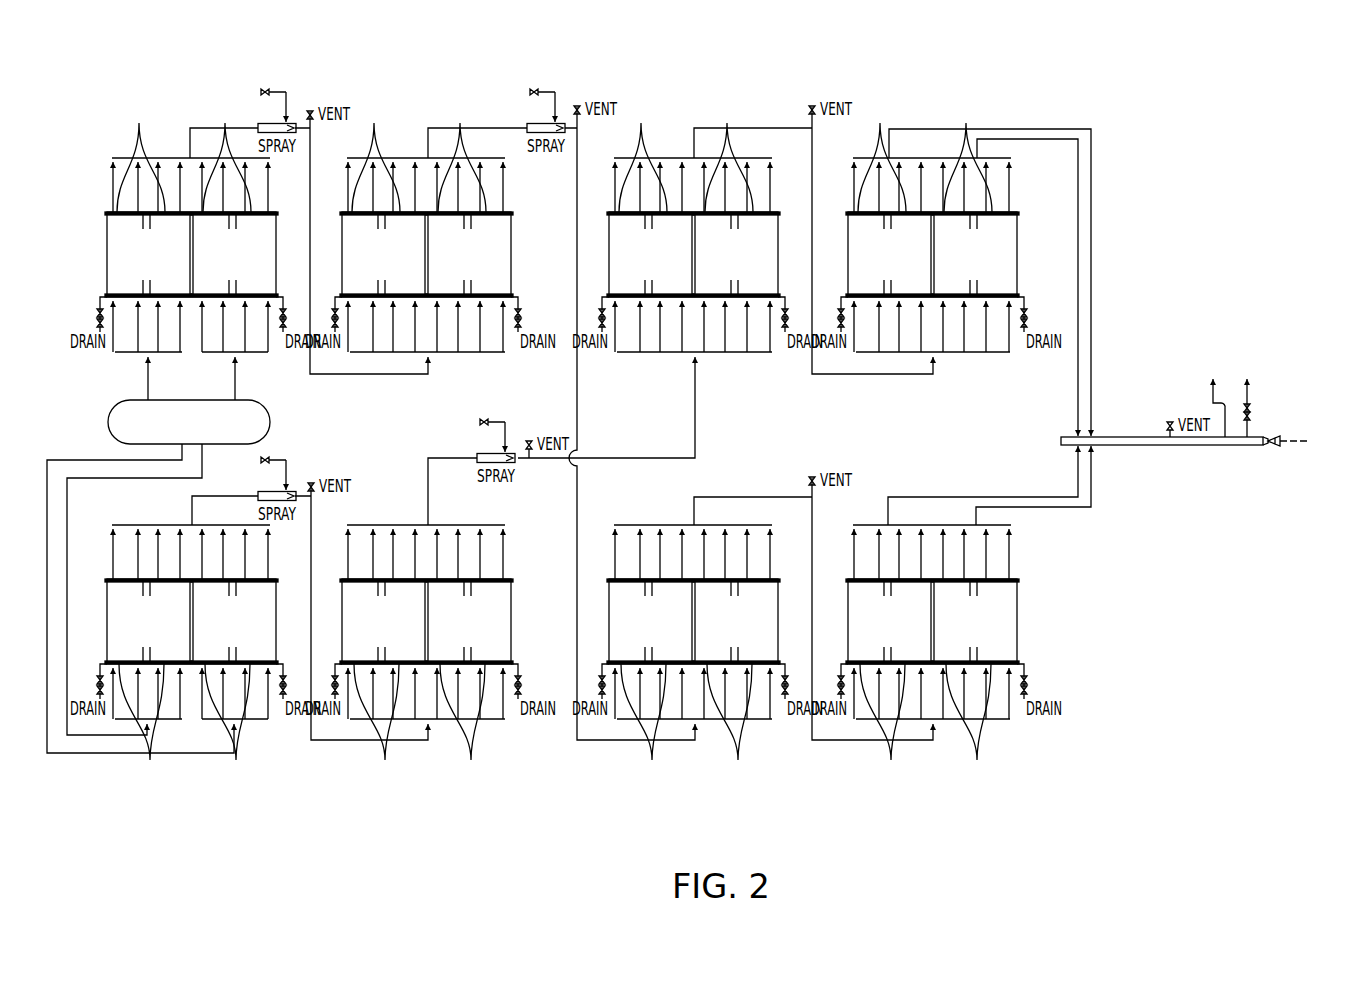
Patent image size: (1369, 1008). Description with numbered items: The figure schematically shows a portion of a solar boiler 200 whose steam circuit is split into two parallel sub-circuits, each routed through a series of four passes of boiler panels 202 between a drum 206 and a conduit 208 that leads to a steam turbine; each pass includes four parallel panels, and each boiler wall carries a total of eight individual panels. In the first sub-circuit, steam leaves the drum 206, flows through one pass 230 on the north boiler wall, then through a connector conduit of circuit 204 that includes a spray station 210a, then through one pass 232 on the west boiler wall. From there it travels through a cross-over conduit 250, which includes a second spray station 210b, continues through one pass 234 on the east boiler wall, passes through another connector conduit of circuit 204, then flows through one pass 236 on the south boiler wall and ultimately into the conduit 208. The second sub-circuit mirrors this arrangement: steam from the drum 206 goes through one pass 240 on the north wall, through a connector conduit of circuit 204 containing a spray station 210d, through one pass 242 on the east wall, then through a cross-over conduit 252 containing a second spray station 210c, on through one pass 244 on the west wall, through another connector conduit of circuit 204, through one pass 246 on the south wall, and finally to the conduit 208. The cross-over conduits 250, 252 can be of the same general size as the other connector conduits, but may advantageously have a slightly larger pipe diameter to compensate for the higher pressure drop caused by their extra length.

The solar boiler 200 is at (1152, 104).
The panels 202 is at (965, 123).
The circuit 204 is at (372, 378).
The drum 206 is at (270, 408).
The conduit 208 is at (1150, 447).
The spray station 210a is at (292, 122).
The spray station 210b is at (560, 122).
The spray station 210c is at (511, 453).
The spray station 210d is at (291, 491).
The pass 230 is at (191, 87).
The pass 232 is at (420, 87).
The pass 234 is at (717, 801).
The pass 236 is at (937, 801).
The pass 240 is at (203, 801).
The pass 242 is at (438, 801).
The pass 244 is at (684, 87).
The pass 246 is at (933, 87).
The cross-over conduit 250 is at (576, 396).
The cross-over conduit 252 is at (694, 440).